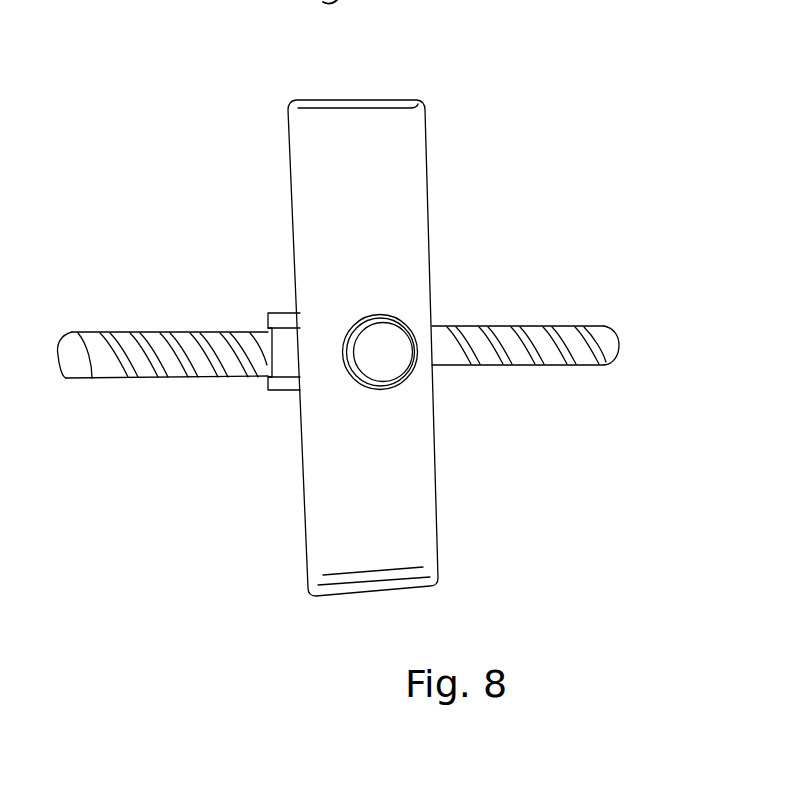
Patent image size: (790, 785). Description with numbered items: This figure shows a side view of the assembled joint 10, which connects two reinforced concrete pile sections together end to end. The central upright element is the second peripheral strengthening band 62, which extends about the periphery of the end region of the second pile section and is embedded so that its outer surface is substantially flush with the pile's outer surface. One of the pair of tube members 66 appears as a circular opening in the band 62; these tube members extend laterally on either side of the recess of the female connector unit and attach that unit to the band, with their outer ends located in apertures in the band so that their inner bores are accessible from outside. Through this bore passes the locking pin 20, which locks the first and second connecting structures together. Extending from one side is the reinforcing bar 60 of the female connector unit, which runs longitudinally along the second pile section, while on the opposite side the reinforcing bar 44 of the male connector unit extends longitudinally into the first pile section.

The joint 10 is at (486, 110).
The locking pin 20 is at (390, 362).
The reinforcing bar 44 is at (584, 327).
The reinforcing bar 60 is at (176, 333).
The second peripheral strengthening band 62 is at (402, 175).
The tube members 66 is at (406, 327).